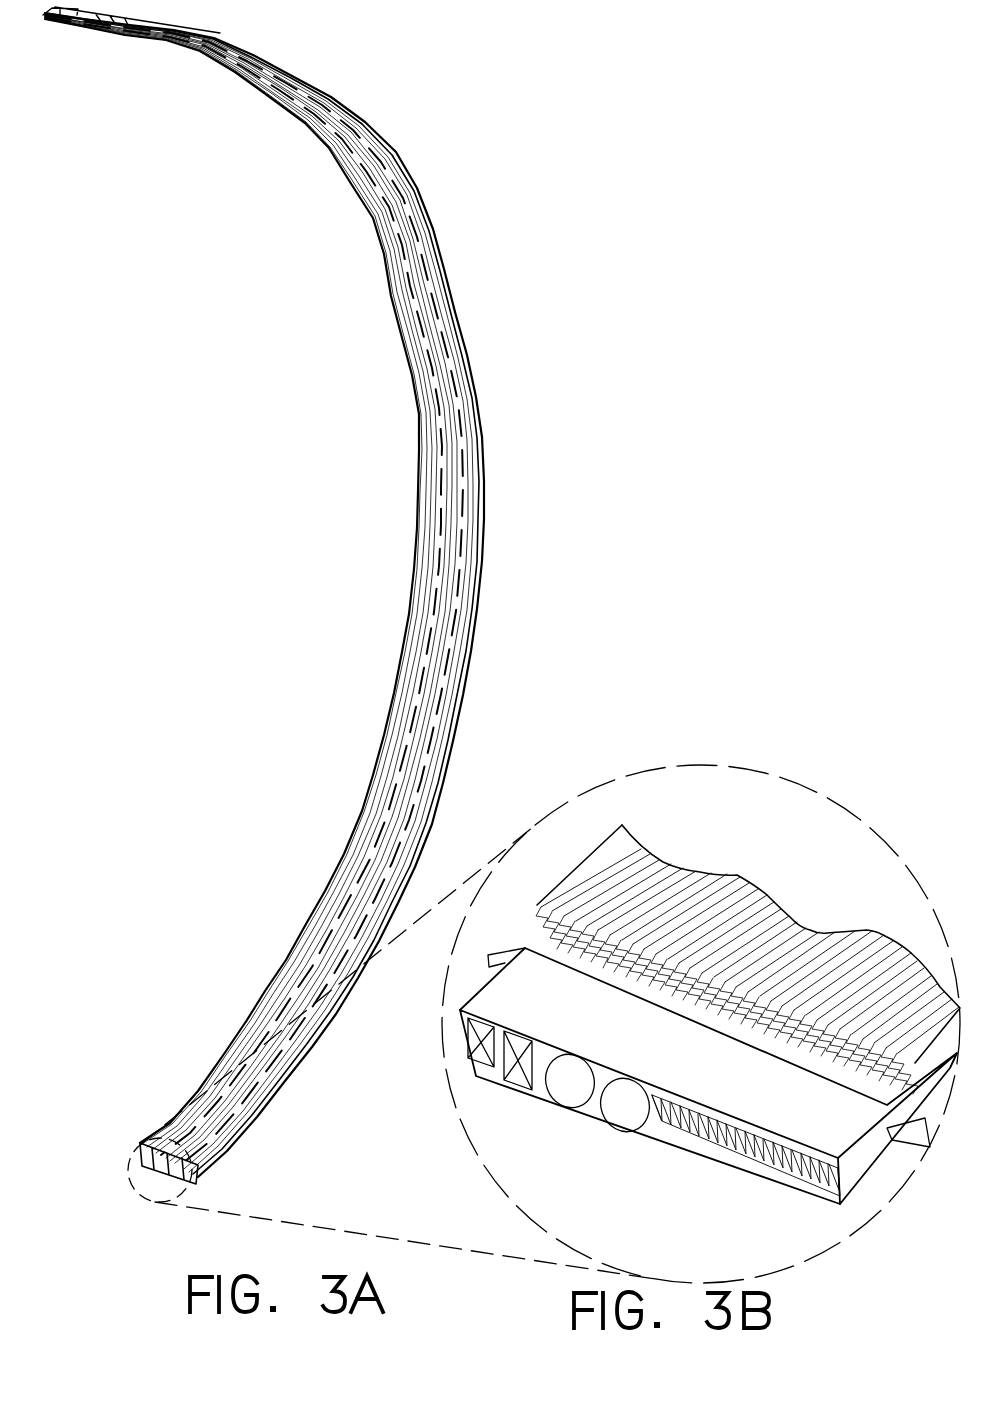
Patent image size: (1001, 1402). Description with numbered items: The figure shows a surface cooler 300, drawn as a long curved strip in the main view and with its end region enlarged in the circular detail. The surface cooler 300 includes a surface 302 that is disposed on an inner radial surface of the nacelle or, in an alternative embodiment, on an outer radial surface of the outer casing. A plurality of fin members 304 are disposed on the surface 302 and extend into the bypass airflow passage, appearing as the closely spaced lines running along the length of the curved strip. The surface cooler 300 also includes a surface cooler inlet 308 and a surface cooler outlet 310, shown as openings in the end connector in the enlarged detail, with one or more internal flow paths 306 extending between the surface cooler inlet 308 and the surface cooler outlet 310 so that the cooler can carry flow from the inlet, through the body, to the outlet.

In FIG. 3A, the surface cooler 300 is at (339, 595).
In FIG. 3A, the surface 302 is at (408, 626).
In FIG. 3A, the fin members 304 is at (413, 747).
In FIG. 3A, the internal flow paths 306 is at (337, 862).
In FIG. 3B, the surface cooler inlet 308 is at (487, 1037).
In FIG. 3B, the surface cooler outlet 310 is at (572, 1085).